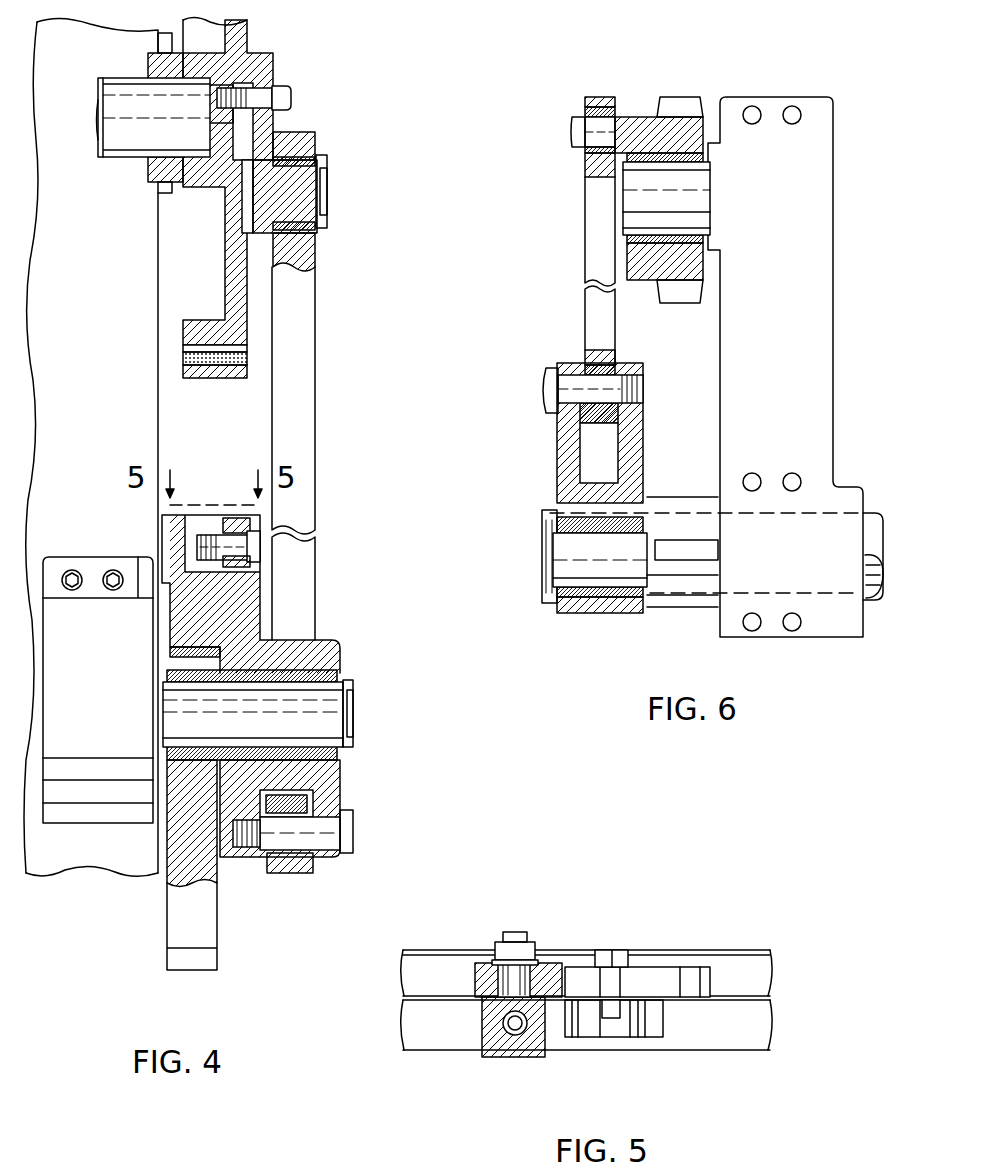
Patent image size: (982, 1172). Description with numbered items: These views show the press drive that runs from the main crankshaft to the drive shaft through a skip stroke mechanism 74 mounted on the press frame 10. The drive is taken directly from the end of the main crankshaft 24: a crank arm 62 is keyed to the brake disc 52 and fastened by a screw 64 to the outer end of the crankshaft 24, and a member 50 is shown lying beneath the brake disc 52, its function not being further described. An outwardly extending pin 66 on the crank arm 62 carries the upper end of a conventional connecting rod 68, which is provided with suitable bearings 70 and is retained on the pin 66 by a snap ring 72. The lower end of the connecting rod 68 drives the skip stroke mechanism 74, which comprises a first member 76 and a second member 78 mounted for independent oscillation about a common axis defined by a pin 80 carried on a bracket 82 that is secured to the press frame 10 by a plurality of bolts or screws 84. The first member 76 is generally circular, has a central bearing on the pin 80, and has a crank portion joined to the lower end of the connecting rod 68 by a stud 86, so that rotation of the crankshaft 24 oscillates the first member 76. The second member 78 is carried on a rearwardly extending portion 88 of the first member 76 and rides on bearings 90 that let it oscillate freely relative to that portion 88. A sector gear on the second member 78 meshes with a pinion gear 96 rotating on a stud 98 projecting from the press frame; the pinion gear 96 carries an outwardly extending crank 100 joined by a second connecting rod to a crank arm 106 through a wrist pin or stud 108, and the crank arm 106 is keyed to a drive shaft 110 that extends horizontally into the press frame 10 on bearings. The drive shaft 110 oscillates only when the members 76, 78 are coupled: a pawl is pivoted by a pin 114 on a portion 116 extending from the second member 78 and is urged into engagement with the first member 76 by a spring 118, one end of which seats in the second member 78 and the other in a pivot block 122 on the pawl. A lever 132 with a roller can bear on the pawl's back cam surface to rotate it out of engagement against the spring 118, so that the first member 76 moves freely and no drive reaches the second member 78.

In FIG. 6, the press frame 10 is at (780, 637).
In FIG. 4, the main crankshaft 24 is at (135, 158).
In FIG. 4, the pad 50 is at (210, 378).
In FIG. 4, the brake disc 52 is at (248, 320).
In FIG. 4, the crank arm 62 is at (258, 113).
In FIG. 4, the screw 64 is at (293, 98).
In FIG. 4, the pin 66 is at (332, 196).
In FIG. 4, the connecting rod 68 is at (316, 420).
In FIG. 4, the bearings 70 is at (318, 247).
In FIG. 4, the snap ring 72 is at (327, 160).
In FIG. 4, the skip stroke mechanism 74 is at (360, 617).
In FIG. 4, the first member 76 is at (262, 612).
In FIG. 5, the first member 76 is at (750, 952).
In FIG. 4, the second member 78 is at (218, 880).
In FIG. 5, the second member 78 is at (727, 1052).
In FIG. 4, the pin 80 is at (354, 716).
In FIG. 4, the bracket 82 is at (332, 668).
In FIG. 4, the bolts or screws 84 is at (112, 570).
In FIG. 4, the stud 86 is at (355, 836).
In FIG. 4, the rearwardly extending portion 88 is at (208, 670).
In FIG. 4, the bearings 90 is at (175, 650).
In FIG. 6, the pinion gear 96 is at (645, 284).
In FIG. 6, the stud 98 is at (702, 190).
In FIG. 6, the crank 100 is at (614, 112).
In FIG. 6, the crank arm 106 is at (645, 457).
In FIG. 6, the wrist pin or stud 108 is at (541, 393).
In FIG. 6, the drive shaft 110 is at (544, 570).
In FIG. 4, the pin 114 is at (250, 531).
In FIG. 5, the pin 114 is at (625, 980).
In FIG. 5, the portion 116 is at (632, 1037).
In FIG. 5, the spring 118 is at (492, 1058).
In FIG. 5, the pivot block 122 is at (522, 1058).
In FIG. 4, the lever 132 is at (238, 512).
In FIG. 5, the lever 132 is at (660, 962).